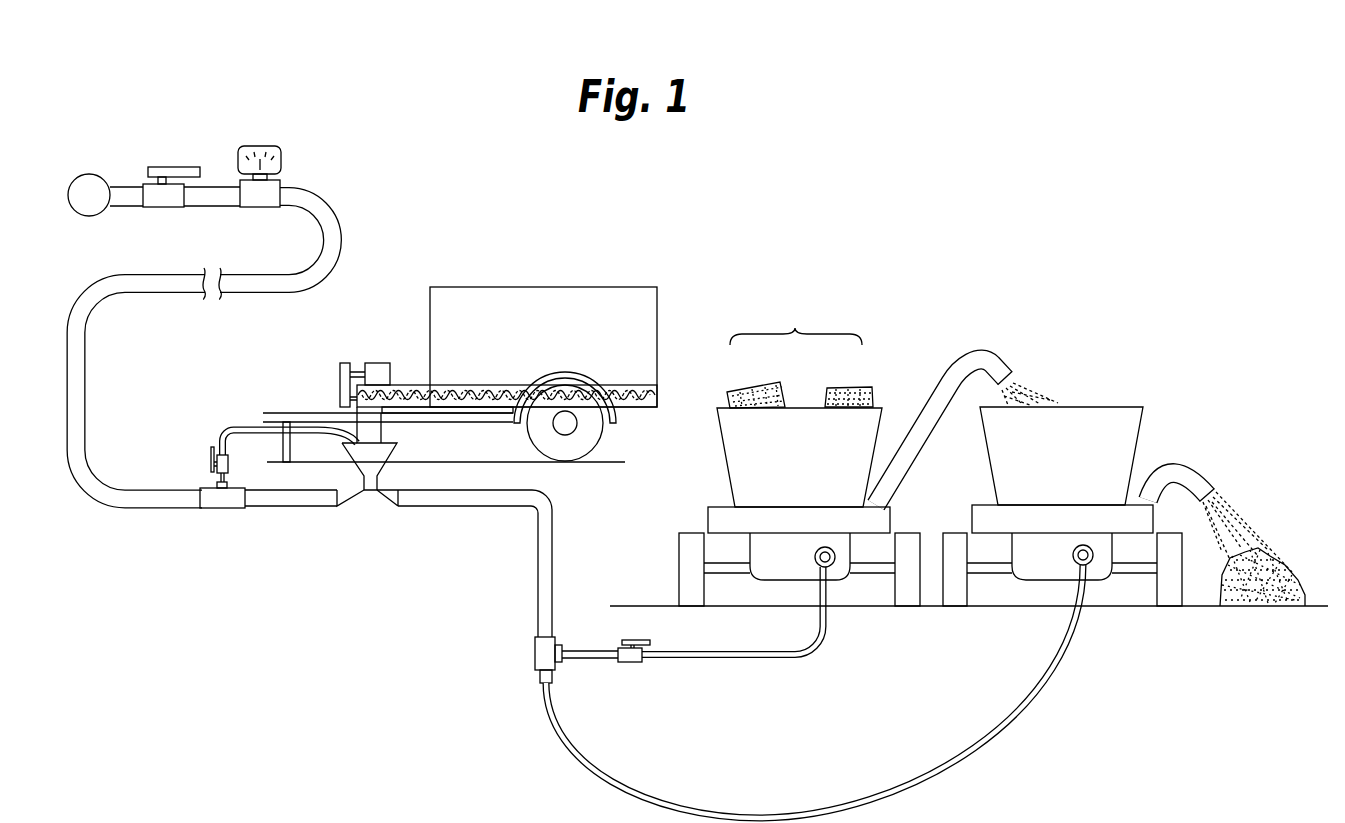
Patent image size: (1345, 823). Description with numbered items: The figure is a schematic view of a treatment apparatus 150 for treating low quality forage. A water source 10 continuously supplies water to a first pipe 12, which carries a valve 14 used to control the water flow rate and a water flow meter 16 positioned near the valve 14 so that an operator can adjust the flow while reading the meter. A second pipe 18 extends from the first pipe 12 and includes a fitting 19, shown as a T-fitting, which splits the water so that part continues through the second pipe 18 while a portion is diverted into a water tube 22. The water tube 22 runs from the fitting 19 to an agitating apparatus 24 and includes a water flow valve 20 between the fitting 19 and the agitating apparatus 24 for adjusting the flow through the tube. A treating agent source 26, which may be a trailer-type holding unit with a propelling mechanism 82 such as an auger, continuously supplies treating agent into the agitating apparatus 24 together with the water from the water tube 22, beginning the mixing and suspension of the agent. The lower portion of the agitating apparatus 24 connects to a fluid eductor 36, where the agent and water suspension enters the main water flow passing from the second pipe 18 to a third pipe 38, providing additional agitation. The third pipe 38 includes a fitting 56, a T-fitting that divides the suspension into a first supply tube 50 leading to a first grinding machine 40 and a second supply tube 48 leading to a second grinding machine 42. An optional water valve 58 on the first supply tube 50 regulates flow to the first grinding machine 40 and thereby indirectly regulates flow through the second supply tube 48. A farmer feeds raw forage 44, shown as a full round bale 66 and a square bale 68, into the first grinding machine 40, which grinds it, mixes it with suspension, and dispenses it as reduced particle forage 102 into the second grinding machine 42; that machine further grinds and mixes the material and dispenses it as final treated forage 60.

The water source 10 is at (94, 175).
The first pipe 12 is at (122, 186).
The valve 14 is at (183, 167).
The water flow meter 16 is at (282, 156).
The second pipe 18 is at (340, 240).
The fitting 19 is at (220, 510).
The water flow valve 20 is at (211, 453).
The water tube 22 is at (237, 424).
The agitating apparatus 24 is at (372, 468).
The treating agent source 26 is at (540, 287).
The fluid eductor 36 is at (362, 504).
The third pipe 38 is at (510, 506).
The first grinding machine 40 is at (878, 427).
The second grinding machine 42 is at (1135, 431).
The raw forage 44 is at (796, 322).
The second supply tube 48 is at (1045, 693).
The first supply tube 50 is at (732, 658).
The fitting 56 is at (533, 653).
The water valve 58 is at (648, 643).
The final treated forage 60 is at (1222, 583).
The full round bale 66 is at (776, 383).
The square bale 68 is at (845, 386).
The propelling mechanism 82 is at (638, 384).
The reduced particle forage 102 is at (1040, 390).
The treatment apparatus 150 is at (768, 242).